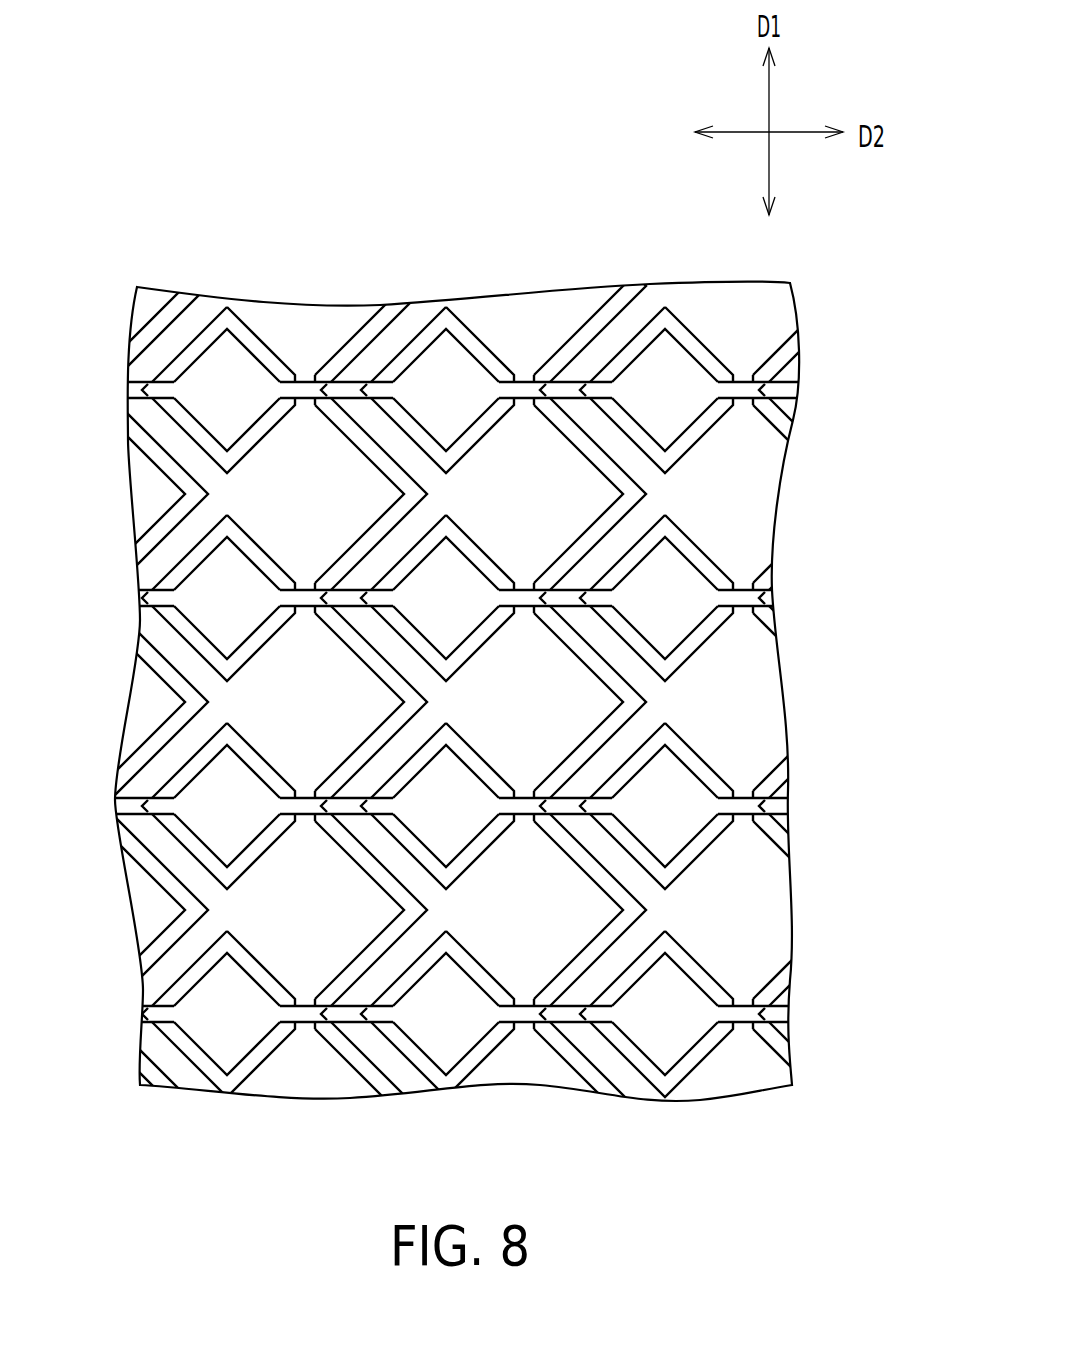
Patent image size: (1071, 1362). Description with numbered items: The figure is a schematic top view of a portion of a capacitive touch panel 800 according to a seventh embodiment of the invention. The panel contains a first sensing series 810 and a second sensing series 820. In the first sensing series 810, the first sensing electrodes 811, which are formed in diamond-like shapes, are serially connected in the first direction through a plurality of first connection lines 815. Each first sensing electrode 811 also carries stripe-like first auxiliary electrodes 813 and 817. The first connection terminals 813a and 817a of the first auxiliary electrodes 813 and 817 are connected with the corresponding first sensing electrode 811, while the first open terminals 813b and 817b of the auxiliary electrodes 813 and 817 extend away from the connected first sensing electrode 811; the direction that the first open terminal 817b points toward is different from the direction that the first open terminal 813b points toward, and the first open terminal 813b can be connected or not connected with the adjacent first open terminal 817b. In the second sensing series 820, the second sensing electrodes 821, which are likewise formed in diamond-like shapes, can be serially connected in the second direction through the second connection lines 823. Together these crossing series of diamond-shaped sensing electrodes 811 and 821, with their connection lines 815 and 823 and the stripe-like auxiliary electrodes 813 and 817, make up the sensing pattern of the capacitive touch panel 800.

The capacitive touch panel 800 is at (882, 1156).
The first sensing series 810 is at (544, 691).
The first sensing electrode 811 is at (668, 542).
The first auxiliary electrode 813 is at (555, 702).
The first connection terminal 813a is at (523, 702).
The first open terminal 813b is at (555, 702).
The first connection line 815 is at (667, 443).
The first auxiliary electrode 817 is at (480, 702).
The first connection terminal 817a is at (480, 702).
The first open terminal 817b is at (424, 702).
The second sensing series 820 is at (453, 641).
The second sensing electrode 821 is at (433, 317).
The second connection line 823 is at (453, 641).